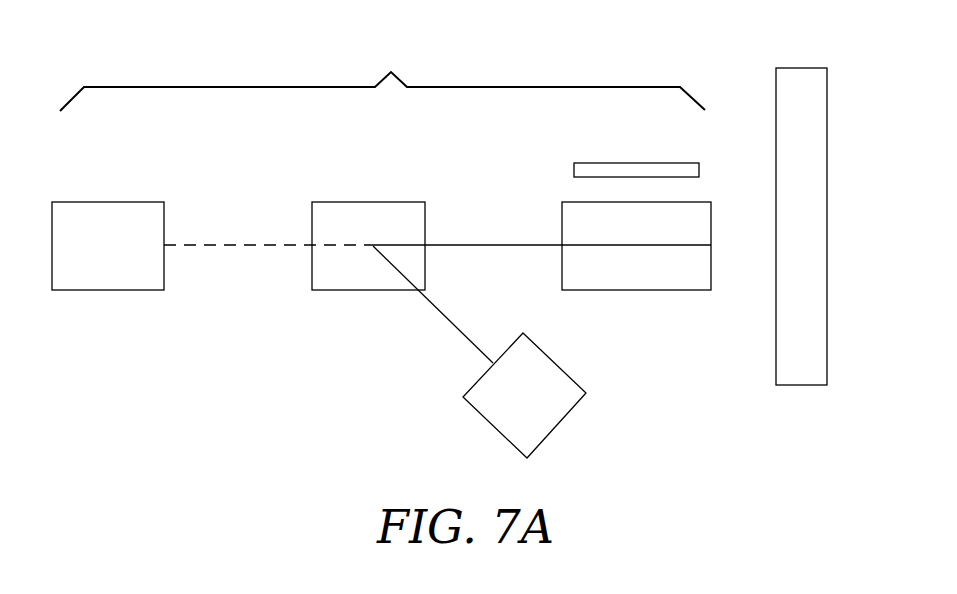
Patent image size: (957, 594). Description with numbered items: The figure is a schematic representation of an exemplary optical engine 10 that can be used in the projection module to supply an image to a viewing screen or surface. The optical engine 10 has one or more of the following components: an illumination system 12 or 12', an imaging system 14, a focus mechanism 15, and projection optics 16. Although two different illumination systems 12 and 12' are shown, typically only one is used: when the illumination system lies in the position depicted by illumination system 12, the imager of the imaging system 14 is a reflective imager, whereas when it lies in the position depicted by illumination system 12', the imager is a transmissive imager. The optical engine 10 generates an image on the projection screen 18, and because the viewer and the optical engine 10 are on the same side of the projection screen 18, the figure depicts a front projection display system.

The optical engine 10 is at (382, 75).
The illumination system 12 is at (541, 395).
The illumination system 12' is at (108, 271).
The imaging system 14 is at (356, 278).
The focus mechanism 15 is at (640, 163).
The projection optics 16 is at (643, 278).
The projection screen 18 is at (797, 80).